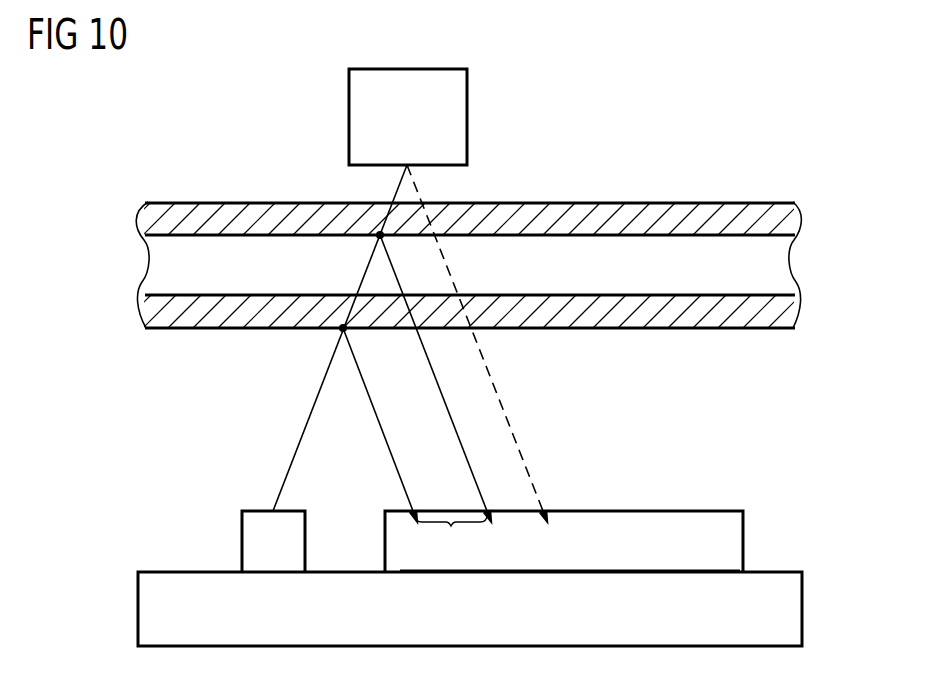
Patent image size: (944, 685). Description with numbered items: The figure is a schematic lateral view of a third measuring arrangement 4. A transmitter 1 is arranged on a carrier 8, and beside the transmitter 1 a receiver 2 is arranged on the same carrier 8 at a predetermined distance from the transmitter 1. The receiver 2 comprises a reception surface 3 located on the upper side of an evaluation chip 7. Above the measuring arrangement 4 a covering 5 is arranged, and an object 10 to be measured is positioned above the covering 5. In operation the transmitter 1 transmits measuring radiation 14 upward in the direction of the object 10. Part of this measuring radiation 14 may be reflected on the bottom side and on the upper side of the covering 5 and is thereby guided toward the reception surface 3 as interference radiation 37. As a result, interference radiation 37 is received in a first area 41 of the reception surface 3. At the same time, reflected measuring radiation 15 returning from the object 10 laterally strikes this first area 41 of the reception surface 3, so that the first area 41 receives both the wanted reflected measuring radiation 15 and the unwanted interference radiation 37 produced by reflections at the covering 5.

The object to be measured 10 is at (457, 117).
The covering 5 is at (780, 266).
The measuring radiation 14 is at (368, 264).
The reflected measuring radiation 15 is at (448, 267).
The interference radiation 37 is at (445, 404).
The measuring arrangement 4 is at (799, 380).
The transmitter 1 is at (274, 559).
The reception surface 3 is at (682, 507).
The receiver 2 is at (570, 591).
The evaluation chip 7 is at (715, 559).
The first area 41 is at (451, 536).
The carrier 8 is at (793, 607).